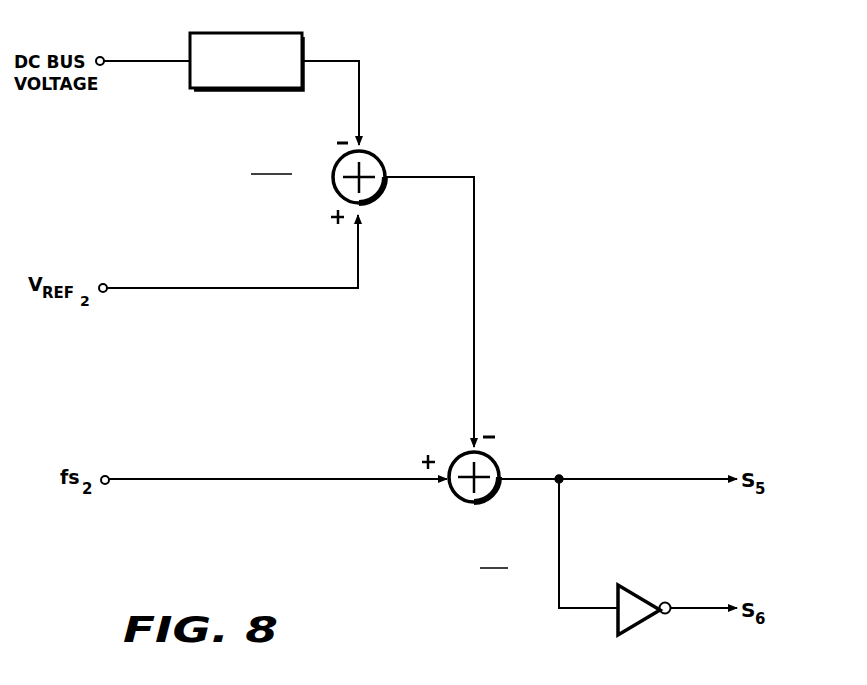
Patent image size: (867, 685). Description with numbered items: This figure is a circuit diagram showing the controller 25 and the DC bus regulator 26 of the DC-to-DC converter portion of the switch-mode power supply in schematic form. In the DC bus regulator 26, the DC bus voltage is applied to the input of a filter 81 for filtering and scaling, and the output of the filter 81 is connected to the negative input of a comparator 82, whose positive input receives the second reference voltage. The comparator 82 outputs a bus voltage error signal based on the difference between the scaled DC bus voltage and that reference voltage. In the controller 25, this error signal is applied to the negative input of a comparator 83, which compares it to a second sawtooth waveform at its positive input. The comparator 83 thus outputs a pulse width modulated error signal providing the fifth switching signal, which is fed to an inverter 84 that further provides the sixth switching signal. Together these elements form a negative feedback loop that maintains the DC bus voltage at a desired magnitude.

The DC bus regulator 26 is at (332, 226).
The controller 25 is at (579, 536).
The filter 81 is at (273, 10).
The comparator 82 is at (374, 197).
The comparator 83 is at (491, 496).
The inverter 84 is at (638, 592).